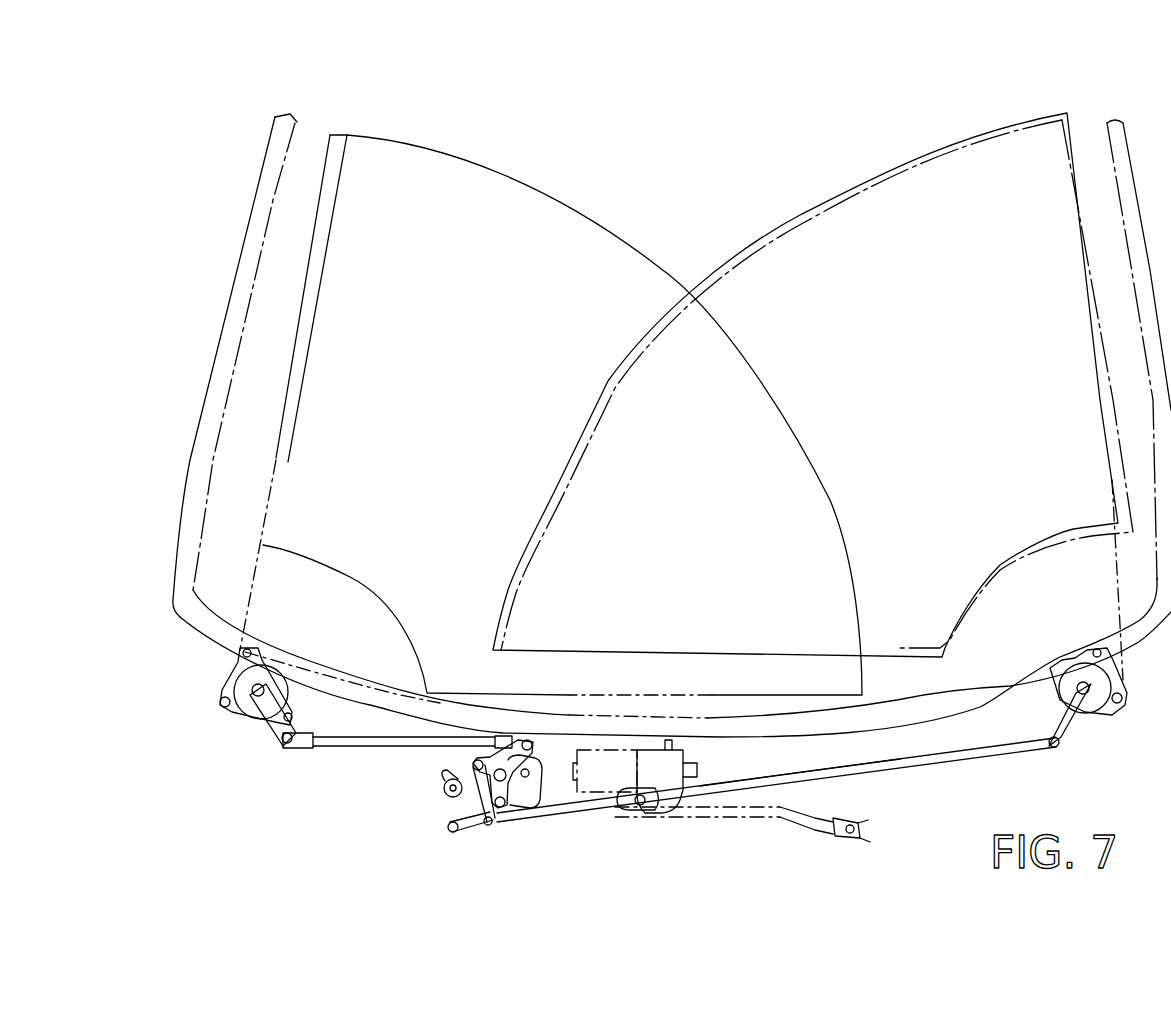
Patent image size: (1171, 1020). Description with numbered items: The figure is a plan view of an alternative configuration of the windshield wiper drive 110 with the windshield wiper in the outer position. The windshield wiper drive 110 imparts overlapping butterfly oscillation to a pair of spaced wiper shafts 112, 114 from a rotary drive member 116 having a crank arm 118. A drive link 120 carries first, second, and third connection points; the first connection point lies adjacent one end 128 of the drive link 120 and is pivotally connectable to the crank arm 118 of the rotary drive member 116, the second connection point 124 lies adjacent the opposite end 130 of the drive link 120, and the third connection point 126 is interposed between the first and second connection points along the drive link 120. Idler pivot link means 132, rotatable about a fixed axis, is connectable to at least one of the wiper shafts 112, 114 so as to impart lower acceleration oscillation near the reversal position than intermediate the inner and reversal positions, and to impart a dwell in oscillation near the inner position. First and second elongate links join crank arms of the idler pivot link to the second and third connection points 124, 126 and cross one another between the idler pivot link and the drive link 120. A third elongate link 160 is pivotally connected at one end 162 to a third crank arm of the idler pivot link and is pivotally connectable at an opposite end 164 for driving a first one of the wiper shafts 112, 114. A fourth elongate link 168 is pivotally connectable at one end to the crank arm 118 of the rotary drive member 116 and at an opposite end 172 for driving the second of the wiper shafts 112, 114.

The windshield wiper drive 110 is at (697, 760).
The wiper shaft 112 is at (253, 705).
The wiper shaft 114 is at (1103, 712).
The rotary drive member 116 is at (800, 690).
The crank arm 118 is at (682, 805).
The drive link 120 is at (548, 805).
The second connection point 124 is at (453, 832).
The third connection point 126 is at (487, 825).
The one end of the drive link 128 is at (630, 810).
The opposite end of the drive link 130 is at (448, 826).
The idler pivot link means 132 is at (465, 757).
The third elongate link 160 is at (360, 738).
The one end of the third elongate link 162 is at (510, 735).
The opposite end of the third elongate link 164 is at (293, 747).
The fourth elongate link 168 is at (920, 765).
The opposite end of the fourth elongate link 172 is at (1045, 745).